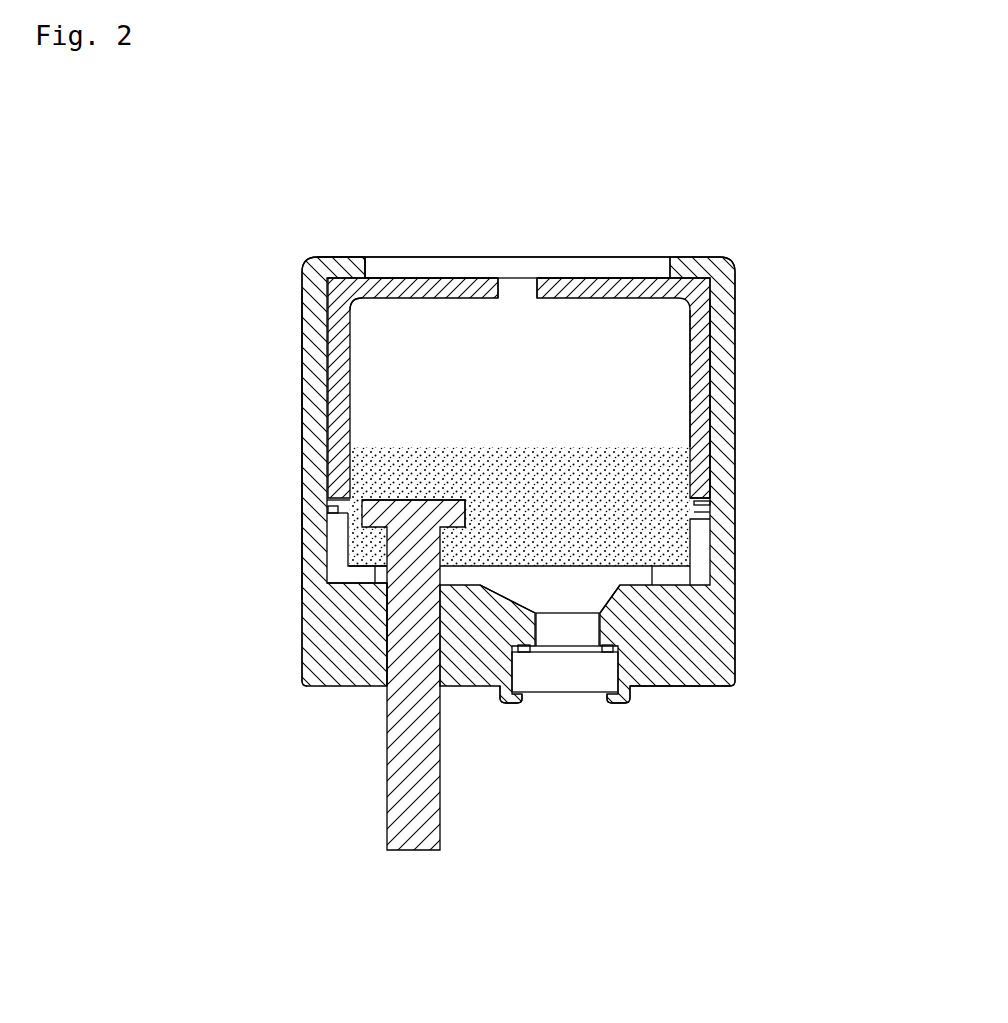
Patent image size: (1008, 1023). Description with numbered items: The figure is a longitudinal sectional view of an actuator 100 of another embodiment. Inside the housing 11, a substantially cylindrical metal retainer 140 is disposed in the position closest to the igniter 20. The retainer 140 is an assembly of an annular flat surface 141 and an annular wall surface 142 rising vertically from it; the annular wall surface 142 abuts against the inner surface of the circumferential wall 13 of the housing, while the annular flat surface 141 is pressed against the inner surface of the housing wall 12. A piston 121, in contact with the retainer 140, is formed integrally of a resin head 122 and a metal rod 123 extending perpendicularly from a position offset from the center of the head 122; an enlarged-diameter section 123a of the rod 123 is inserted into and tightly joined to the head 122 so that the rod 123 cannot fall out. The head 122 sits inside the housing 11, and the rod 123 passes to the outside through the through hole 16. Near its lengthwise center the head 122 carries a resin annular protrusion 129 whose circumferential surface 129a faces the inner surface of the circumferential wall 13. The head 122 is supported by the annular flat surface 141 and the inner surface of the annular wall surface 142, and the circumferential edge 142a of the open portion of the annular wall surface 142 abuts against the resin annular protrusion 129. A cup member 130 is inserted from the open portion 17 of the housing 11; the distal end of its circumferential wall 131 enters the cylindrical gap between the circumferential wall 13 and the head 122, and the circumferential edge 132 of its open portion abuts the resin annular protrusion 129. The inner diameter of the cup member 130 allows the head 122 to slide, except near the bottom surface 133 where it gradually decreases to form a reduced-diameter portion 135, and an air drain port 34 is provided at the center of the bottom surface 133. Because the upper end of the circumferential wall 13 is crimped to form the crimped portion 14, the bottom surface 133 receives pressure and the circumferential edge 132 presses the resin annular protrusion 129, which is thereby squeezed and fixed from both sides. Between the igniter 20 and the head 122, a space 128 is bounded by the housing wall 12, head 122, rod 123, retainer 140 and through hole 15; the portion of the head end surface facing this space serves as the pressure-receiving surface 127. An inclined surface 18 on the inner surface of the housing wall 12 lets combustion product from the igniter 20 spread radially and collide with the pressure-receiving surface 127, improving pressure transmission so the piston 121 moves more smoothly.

The actuator 100 is at (604, 222).
The housing 11 is at (746, 355).
The housing wall 12 is at (712, 667).
The circumferential wall 13 is at (318, 356).
The crimped portion 14 is at (356, 268).
The through hole 15 is at (607, 703).
The through hole 16 is at (384, 689).
The open portion 17 is at (400, 270).
The inclined surface 18 is at (622, 594).
The igniter 20 is at (582, 684).
The air drain port 34 is at (516, 290).
The piston 121 is at (570, 437).
The head 122 is at (497, 462).
The rod 123 is at (402, 815).
The enlarged-diameter section 123a is at (375, 515).
The pressure-receiving surface 127 is at (510, 572).
The space 128 is at (557, 600).
The resin annular protrusion 129 is at (712, 513).
The circumferential surface 129a is at (330, 508).
The cup member 130 is at (704, 284).
The circumferential wall 131 is at (712, 400).
The circumferential edge 132 is at (708, 504).
The bottom surface 133 is at (450, 287).
The reduced-diameter portion 135 is at (362, 312).
The retainer 140 is at (708, 568).
The annular flat surface 141 is at (355, 578).
The annular wall surface 142 is at (333, 549).
The circumferential edge 142a is at (340, 514).